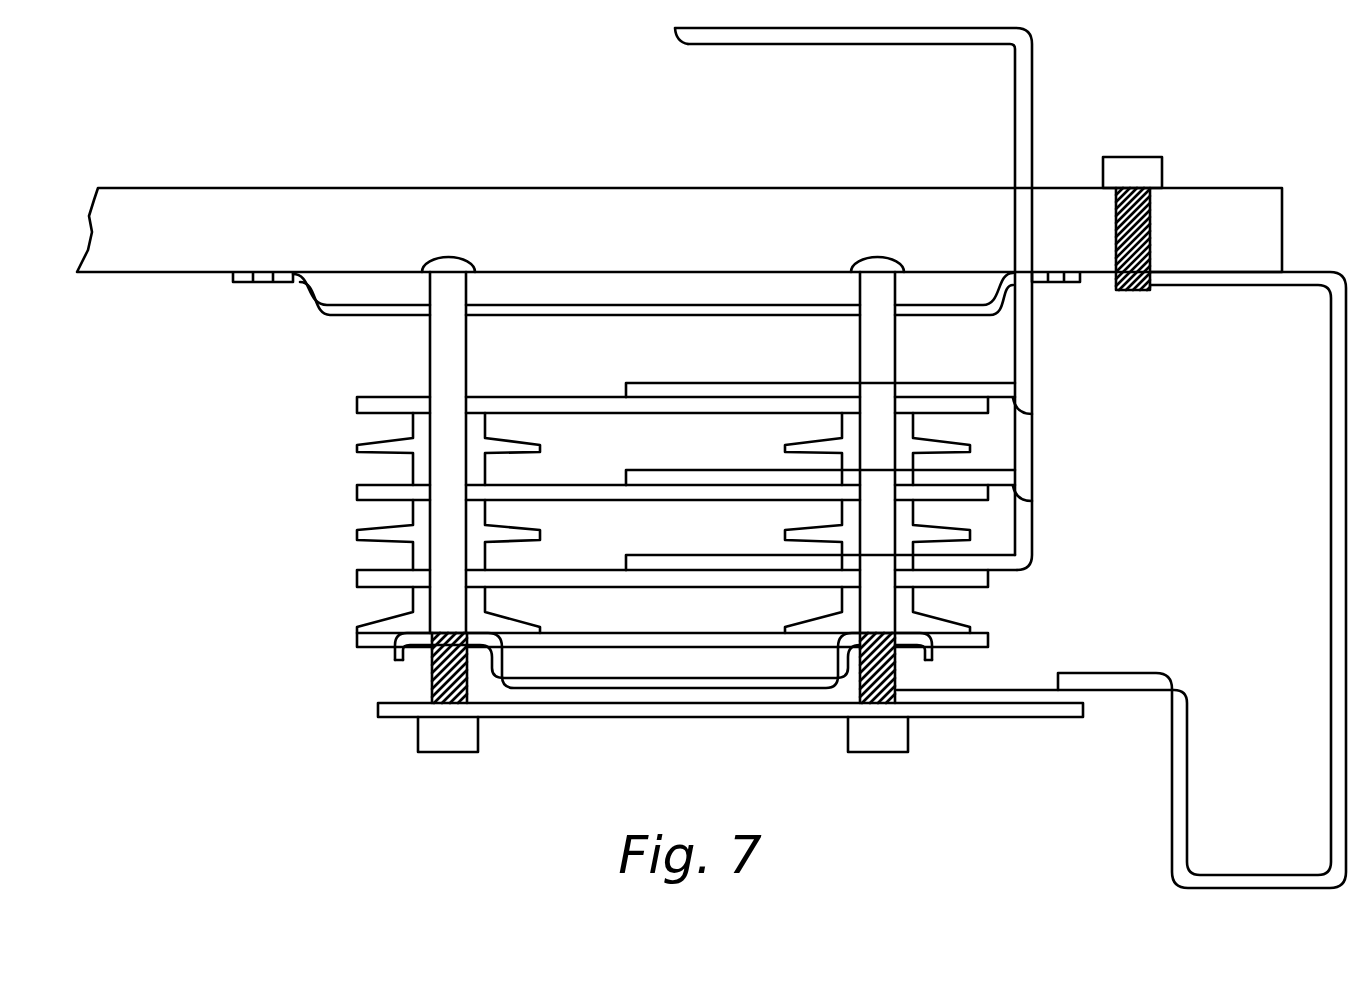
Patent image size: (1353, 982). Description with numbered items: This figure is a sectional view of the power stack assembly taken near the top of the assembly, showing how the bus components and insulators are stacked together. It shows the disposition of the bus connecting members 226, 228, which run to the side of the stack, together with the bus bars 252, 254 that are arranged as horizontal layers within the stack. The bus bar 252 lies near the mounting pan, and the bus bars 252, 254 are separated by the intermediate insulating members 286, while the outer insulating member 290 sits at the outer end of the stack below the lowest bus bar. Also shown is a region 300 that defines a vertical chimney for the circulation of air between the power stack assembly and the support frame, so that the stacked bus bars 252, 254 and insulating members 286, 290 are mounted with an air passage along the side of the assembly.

The bus connecting member 226 is at (1010, 487).
The bus connecting member 228 is at (1010, 400).
The bus bar 252 is at (362, 397).
The bus bar 254 is at (357, 486).
The intermediate insulating member 286 is at (357, 447).
The outer insulating member 290 is at (357, 635).
The region 300 is at (1275, 526).